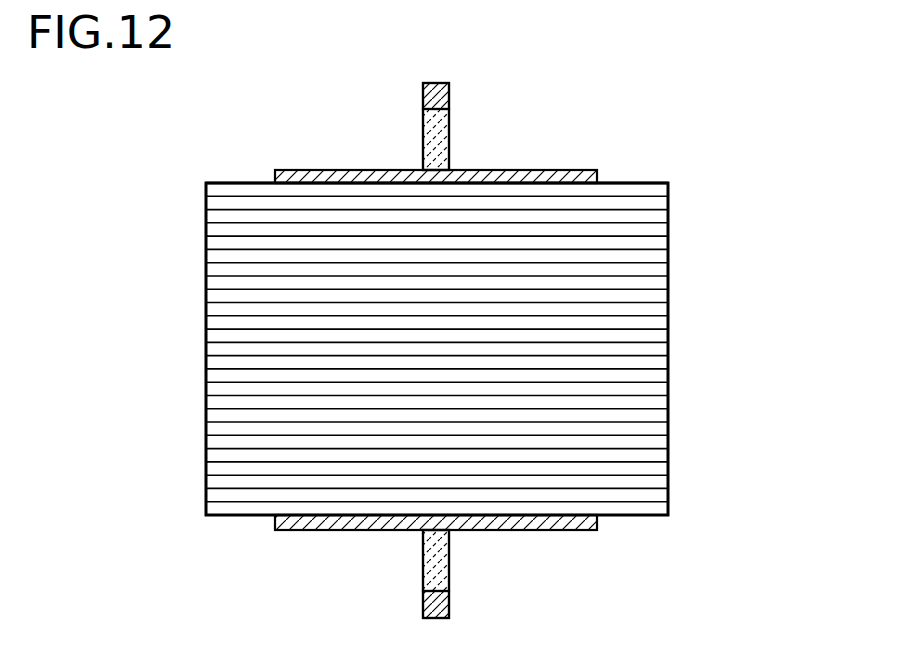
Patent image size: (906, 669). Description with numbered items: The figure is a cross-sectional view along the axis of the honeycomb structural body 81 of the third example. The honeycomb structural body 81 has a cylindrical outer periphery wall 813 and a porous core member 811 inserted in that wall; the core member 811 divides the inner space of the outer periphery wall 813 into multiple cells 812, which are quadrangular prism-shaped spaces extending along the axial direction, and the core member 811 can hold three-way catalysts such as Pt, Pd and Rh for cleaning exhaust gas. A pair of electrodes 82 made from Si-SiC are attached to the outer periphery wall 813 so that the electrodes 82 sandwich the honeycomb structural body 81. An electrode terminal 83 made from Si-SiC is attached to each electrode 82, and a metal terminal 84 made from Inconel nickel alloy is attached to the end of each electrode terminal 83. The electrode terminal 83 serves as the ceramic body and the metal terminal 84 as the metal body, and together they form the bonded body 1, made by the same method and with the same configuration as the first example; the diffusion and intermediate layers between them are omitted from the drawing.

The bonded body 1 is at (646, 76).
The honeycomb structural body 81 is at (697, 219).
The core member 811 is at (260, 372).
The cells 812 is at (254, 322).
The outer periphery wall 813 is at (245, 182).
The electrodes 82 is at (353, 180).
The electrode terminal 83 is at (438, 150).
The metal terminal 84 is at (437, 98).